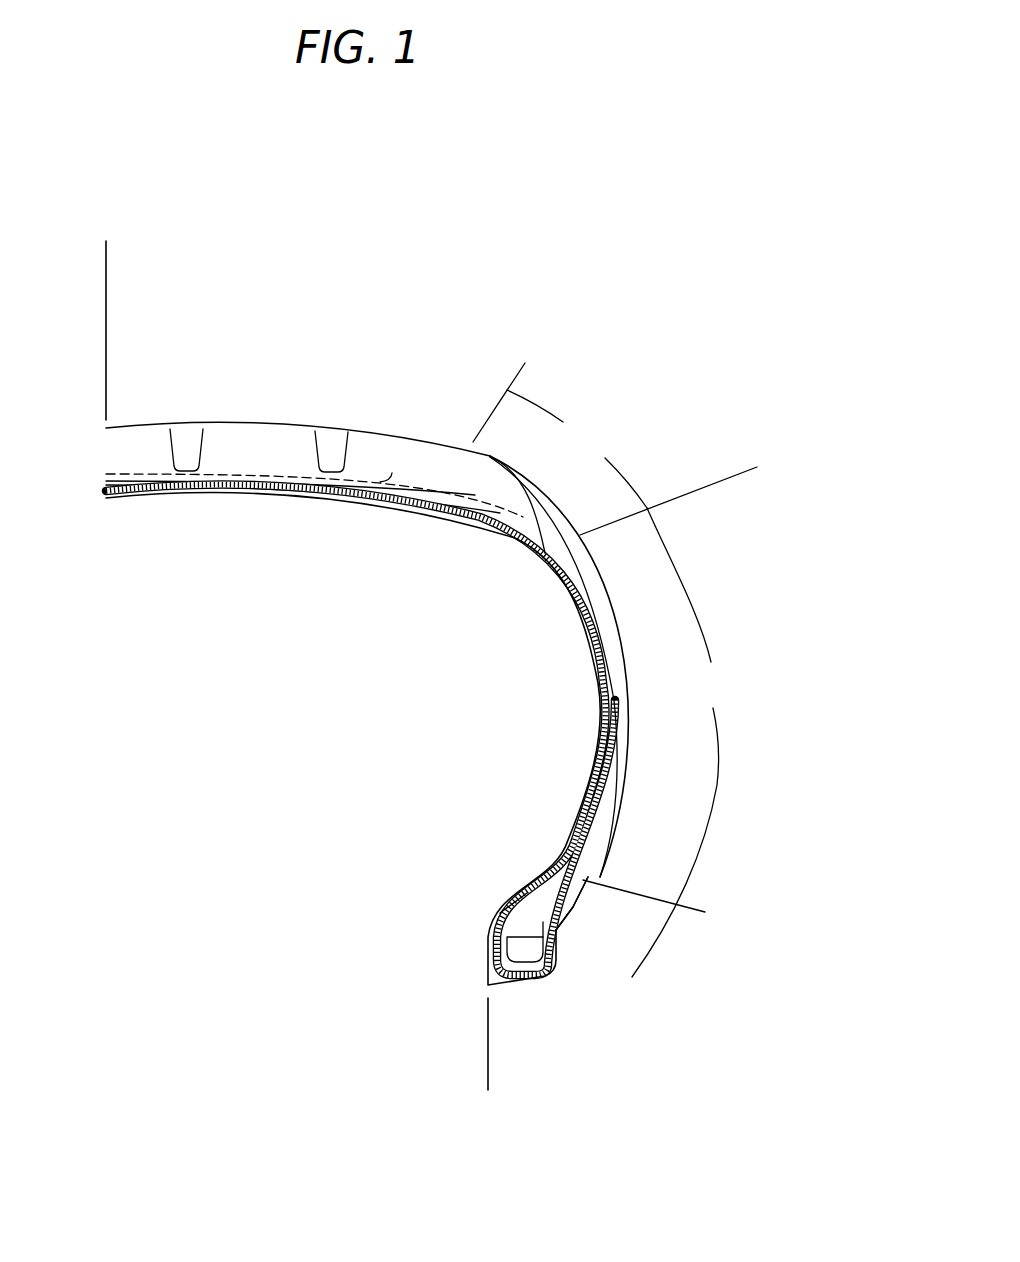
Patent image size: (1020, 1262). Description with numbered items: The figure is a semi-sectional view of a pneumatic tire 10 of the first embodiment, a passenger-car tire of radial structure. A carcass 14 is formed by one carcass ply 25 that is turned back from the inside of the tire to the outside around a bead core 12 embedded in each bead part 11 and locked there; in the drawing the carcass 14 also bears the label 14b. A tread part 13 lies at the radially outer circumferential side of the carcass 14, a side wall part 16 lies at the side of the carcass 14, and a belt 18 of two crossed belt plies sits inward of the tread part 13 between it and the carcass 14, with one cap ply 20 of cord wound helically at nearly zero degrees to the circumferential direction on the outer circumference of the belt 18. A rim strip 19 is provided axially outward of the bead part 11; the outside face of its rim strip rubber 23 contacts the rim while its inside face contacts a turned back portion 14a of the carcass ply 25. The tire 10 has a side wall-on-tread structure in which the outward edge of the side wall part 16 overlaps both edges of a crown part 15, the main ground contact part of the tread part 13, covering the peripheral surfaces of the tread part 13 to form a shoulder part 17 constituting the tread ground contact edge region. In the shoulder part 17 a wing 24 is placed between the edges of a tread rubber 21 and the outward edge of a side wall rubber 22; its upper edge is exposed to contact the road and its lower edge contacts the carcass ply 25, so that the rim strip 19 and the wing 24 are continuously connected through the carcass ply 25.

The pneumatic tire 10 is at (682, 238).
The bead part 11 is at (488, 1065).
The bead core 12 is at (517, 953).
The tread part 13 is at (730, 472).
The carcass 14 is at (603, 683).
The turned back portion 14a is at (602, 800).
The carcass turn-up portion 14b is at (615, 702).
The crown part 15 is at (507, 390).
The side wall part 16 is at (683, 742).
The shoulder part 17 is at (577, 449).
The belt 18 is at (245, 482).
The rim strip 19 is at (575, 913).
The cap ply 20 is at (392, 473).
The tread rubber 21 is at (232, 447).
The side wall rubber 22 is at (612, 633).
The rim strip rubber 23 is at (610, 877).
The wing 24 is at (540, 520).
The carcass ply 25 is at (557, 580).